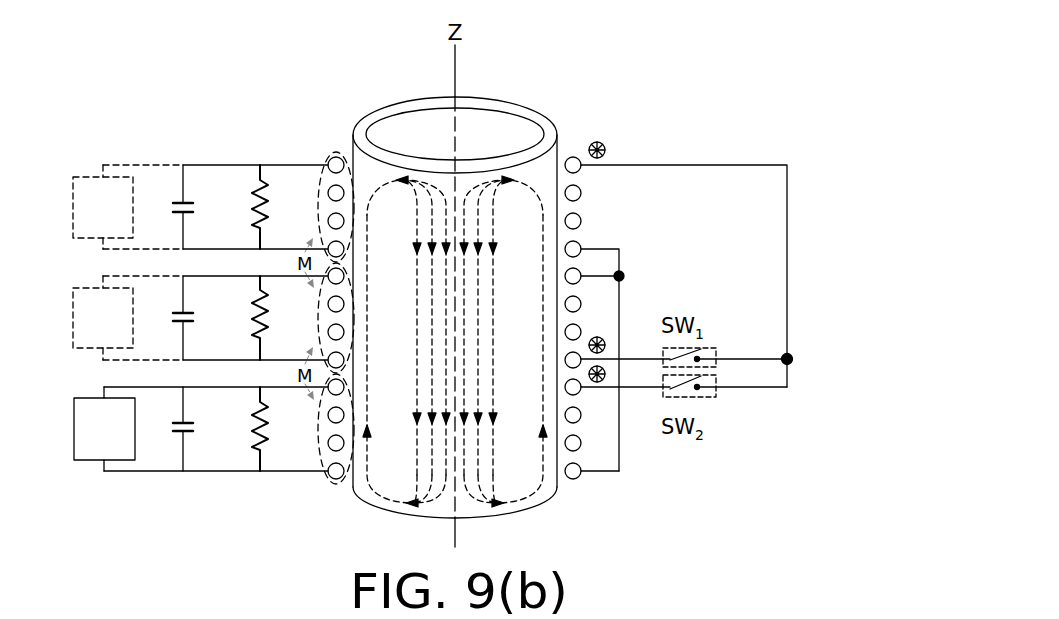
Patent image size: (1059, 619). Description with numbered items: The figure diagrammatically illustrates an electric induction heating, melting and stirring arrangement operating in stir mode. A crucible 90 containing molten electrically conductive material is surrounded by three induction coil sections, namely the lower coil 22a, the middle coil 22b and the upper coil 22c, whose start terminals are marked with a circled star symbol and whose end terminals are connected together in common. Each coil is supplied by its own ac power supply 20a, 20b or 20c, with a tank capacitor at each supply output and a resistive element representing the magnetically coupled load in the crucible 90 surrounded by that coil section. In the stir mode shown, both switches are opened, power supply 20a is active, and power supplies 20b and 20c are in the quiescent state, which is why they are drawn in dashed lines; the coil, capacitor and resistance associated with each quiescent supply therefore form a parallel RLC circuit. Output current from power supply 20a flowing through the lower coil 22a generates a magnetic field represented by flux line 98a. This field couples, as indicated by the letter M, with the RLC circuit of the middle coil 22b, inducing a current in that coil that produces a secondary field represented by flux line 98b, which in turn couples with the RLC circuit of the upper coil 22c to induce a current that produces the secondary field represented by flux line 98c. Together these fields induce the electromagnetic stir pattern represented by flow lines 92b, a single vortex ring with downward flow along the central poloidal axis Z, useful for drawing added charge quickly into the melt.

The crucible 90 is at (503, 108).
The flow lines 92b is at (378, 301).
The flux line 98a is at (326, 478).
The flux line 98b is at (314, 303).
The flux line 98c is at (328, 156).
The ac power supply 20a is at (201, 429).
The ac power supply 20b is at (200, 318).
The ac power supply 20c is at (200, 207).
The lower coil 22a is at (813, 378).
The middle coil 22b is at (813, 263).
The upper coil 22c is at (813, 152).